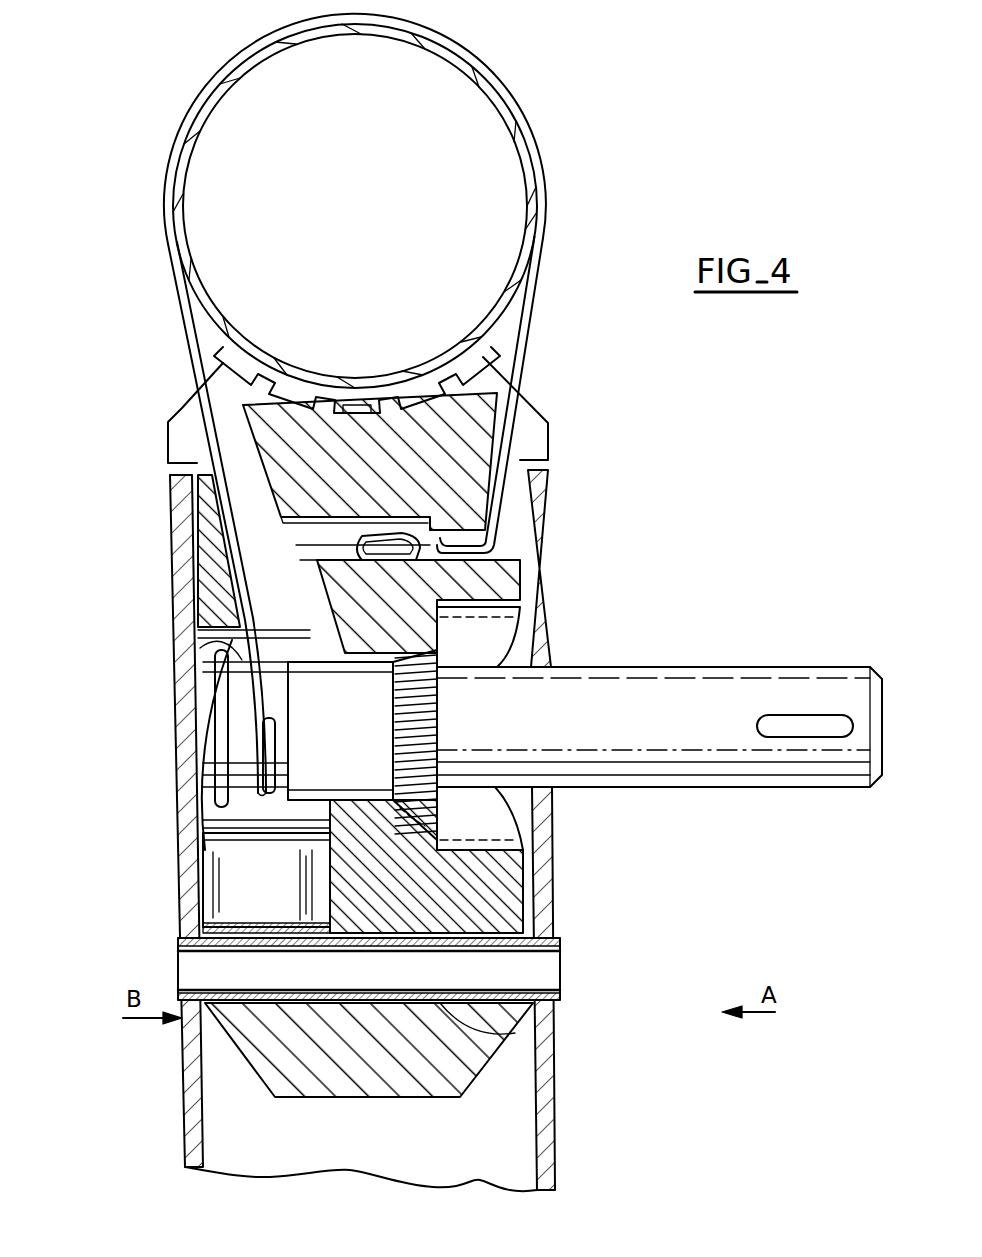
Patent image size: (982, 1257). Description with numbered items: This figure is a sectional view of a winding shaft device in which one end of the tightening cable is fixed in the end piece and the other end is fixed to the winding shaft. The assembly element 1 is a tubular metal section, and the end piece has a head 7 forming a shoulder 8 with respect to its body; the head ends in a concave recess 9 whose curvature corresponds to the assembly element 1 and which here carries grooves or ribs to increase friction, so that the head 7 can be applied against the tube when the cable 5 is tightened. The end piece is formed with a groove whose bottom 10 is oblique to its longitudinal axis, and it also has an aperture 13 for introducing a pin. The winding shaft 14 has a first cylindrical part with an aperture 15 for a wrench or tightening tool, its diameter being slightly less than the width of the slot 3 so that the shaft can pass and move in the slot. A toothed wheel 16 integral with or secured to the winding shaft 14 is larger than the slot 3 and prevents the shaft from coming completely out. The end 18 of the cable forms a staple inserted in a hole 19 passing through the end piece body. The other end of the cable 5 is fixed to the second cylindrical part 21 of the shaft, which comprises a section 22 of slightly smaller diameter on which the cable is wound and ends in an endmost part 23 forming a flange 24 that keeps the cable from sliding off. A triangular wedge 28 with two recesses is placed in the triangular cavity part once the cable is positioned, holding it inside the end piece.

The assembly element 1 is at (520, 113).
The slot 3 is at (540, 552).
The cable 5 is at (546, 182).
The head 7 is at (228, 432).
The shoulder 8 is at (540, 452).
The concave recess 9 is at (480, 372).
The groove bottom 10 is at (490, 492).
The aperture 13 is at (490, 1043).
The winding shaft 14 is at (683, 708).
The aperture 15 is at (805, 730).
The toothed wheel 16 is at (440, 700).
The cable end 18 is at (352, 545).
The hole 19 is at (330, 580).
The second cylindrical part 21 is at (328, 765).
The section of smaller diameter 22 is at (205, 640).
The endmost part 23 is at (222, 690).
The flange 24 is at (212, 826).
The triangular wedge 28 is at (215, 577).